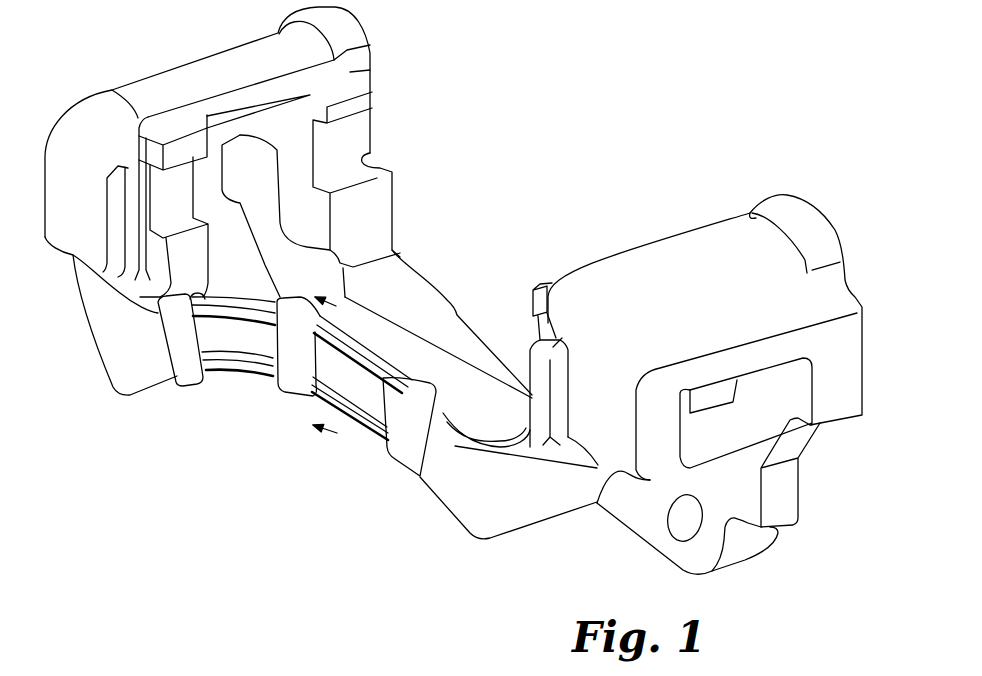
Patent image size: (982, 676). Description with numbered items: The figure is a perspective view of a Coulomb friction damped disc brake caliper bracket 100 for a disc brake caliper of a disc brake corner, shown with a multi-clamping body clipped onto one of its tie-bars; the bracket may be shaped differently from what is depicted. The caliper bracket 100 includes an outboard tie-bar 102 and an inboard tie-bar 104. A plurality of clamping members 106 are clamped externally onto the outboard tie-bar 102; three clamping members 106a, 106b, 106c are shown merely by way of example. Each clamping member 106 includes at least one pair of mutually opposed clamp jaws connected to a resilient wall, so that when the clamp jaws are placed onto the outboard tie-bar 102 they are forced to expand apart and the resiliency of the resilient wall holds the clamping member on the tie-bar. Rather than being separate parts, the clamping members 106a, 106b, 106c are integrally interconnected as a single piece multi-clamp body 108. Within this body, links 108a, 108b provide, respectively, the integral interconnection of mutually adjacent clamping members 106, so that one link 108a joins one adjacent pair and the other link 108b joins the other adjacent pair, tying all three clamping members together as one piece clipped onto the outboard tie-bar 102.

The Coulomb friction damped disc brake caliper bracket 100 is at (453, 291).
The outboard tie-bar 102 is at (457, 483).
The inboard tie-bar 104 is at (453, 313).
The clamping members 106 is at (253, 417).
The first clamping member 106a is at (185, 383).
The second clamping member 106b is at (288, 401).
The third clamping member 106c is at (393, 463).
The multi-clamp body 108 is at (302, 381).
The link 108a is at (232, 315).
The link 108b is at (363, 410).